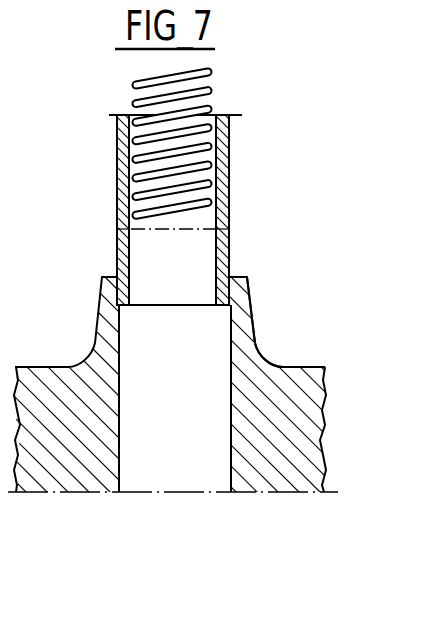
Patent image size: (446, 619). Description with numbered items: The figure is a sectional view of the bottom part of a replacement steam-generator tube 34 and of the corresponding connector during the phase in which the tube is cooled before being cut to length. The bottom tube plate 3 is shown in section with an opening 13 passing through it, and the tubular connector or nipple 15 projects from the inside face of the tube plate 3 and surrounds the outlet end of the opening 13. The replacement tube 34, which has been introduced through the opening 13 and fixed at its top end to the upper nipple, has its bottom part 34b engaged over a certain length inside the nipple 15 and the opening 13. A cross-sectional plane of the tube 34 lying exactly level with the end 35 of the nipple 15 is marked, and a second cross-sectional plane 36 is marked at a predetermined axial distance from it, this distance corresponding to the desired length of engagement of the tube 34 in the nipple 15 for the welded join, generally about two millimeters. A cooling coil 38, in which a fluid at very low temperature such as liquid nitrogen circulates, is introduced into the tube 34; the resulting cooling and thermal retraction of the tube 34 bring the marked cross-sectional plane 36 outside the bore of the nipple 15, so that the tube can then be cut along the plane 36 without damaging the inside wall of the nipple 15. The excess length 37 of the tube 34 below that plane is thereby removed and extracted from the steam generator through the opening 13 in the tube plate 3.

The bottom tube plate 3 is at (285, 470).
The opening 13 is at (162, 443).
The connector (nipple) 15 is at (238, 323).
The replacement tube 34 is at (229, 166).
The bottom part of the tube 34b is at (229, 211).
The end of the nipple 35 is at (243, 277).
The cross-sectional plane 36 is at (229, 229).
The excess length 37 is at (217, 290).
The cooling coil 38 is at (212, 106).